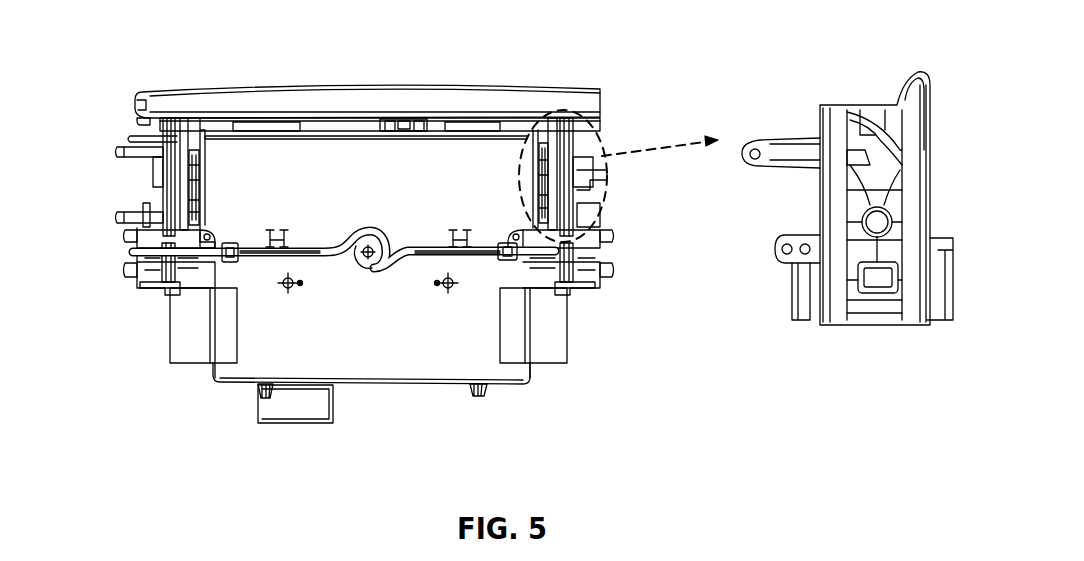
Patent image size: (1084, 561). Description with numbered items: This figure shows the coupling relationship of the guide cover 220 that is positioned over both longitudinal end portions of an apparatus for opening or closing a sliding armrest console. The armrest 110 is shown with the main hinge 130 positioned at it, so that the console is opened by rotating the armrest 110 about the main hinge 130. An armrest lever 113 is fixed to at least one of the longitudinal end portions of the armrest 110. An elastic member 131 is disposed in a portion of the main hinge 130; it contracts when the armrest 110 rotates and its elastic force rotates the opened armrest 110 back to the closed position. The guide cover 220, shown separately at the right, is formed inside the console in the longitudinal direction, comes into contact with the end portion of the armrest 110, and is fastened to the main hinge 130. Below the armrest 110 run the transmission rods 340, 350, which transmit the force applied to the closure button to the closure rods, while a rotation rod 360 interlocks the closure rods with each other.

The armrest 110 is at (455, 100).
The armrest lever 113 is at (182, 178).
The main hinge 130 is at (501, 118).
The elastic member 131 is at (405, 119).
The guide cover 220 is at (870, 107).
The transmission rod 340 is at (537, 253).
The transmission rod 350 is at (426, 253).
The rotation rod 360 is at (360, 266).